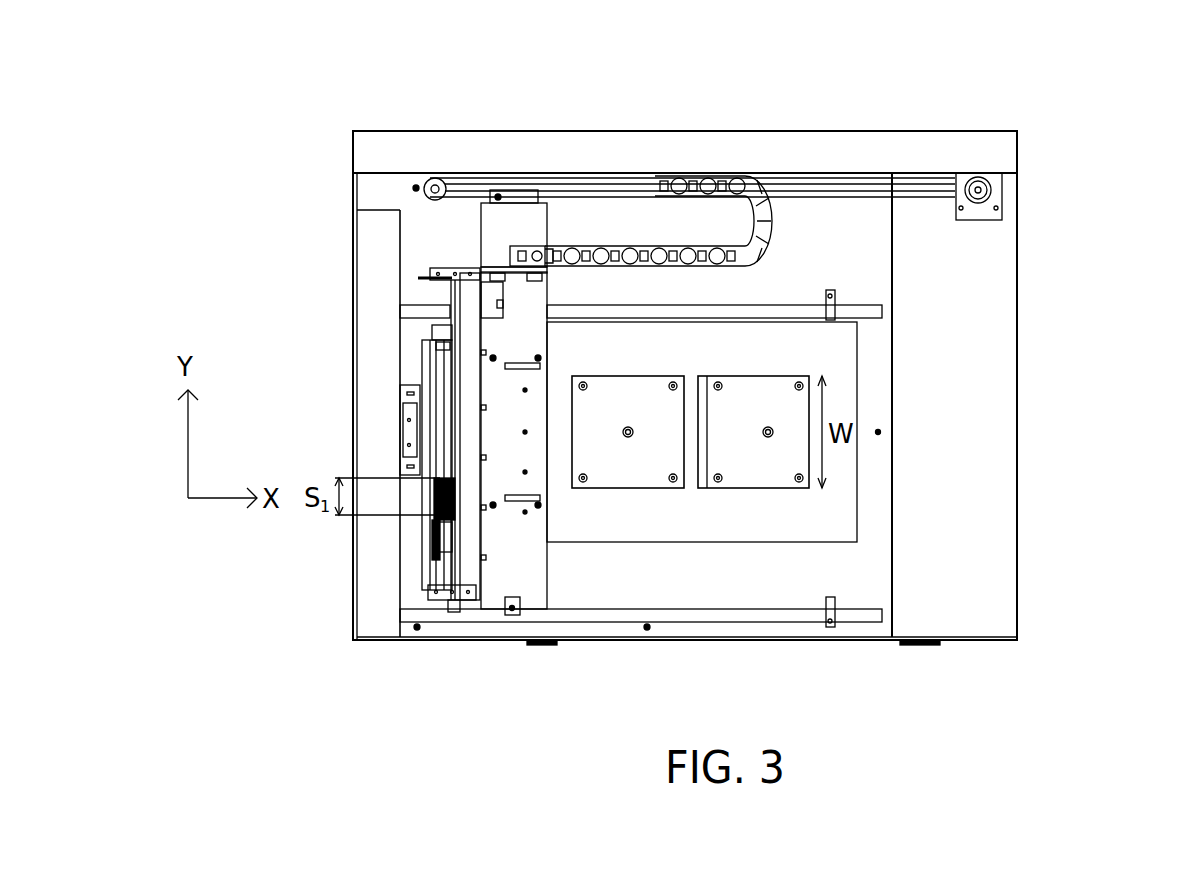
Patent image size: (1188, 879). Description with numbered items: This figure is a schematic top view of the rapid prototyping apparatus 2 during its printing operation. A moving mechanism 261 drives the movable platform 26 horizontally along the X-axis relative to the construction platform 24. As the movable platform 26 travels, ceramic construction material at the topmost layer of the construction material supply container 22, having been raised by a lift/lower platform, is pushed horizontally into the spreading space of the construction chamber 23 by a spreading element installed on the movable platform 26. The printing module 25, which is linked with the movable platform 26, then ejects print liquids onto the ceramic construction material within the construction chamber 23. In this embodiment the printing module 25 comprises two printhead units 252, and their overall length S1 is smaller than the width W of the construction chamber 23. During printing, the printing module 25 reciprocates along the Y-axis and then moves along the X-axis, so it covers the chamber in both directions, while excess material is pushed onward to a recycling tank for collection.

The rapid prototyping apparatus 2 is at (1160, 157).
The construction material supply container 22 is at (628, 376).
The construction chamber 23 is at (752, 376).
The construction platform 24 is at (820, 352).
The printing module 25 is at (439, 560).
The printhead unit 252 is at (455, 510).
The movable platform 26 is at (515, 220).
The moving mechanism 261 is at (720, 166).